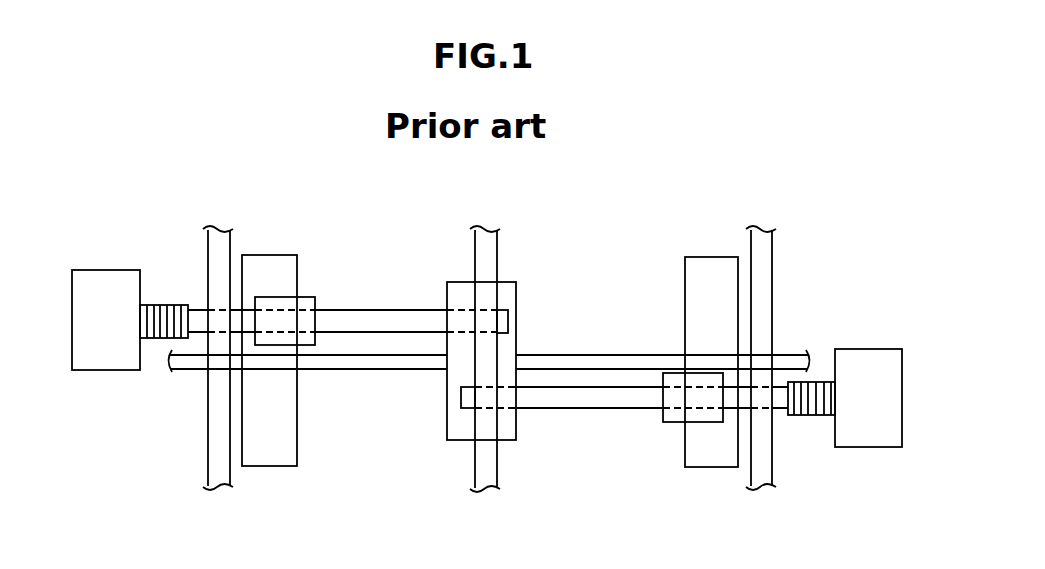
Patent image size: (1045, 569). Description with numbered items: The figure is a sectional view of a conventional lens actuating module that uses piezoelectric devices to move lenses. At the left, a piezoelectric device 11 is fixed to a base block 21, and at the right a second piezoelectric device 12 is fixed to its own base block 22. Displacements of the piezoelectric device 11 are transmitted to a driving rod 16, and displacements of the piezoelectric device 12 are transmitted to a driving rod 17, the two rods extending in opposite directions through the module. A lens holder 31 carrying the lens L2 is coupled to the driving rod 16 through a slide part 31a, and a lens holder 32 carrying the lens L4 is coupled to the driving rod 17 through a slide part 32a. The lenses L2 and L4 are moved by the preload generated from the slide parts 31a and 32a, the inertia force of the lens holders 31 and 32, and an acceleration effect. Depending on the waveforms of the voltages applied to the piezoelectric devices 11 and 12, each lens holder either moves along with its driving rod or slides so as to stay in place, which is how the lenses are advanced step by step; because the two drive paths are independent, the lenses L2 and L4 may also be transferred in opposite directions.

The base block 21 is at (103, 370).
The piezoelectric device 11 is at (162, 304).
The driving rod 16 is at (370, 310).
The lens holder 31 is at (273, 466).
The slide part 31a is at (302, 297).
The lens L2 is at (302, 397).
The driving rod 17 is at (580, 408).
The lens holder 32 is at (705, 257).
The slide part 32a is at (675, 422).
The lens L4 is at (679, 293).
The piezoelectric device 12 is at (817, 382).
The base block 22 is at (865, 447).